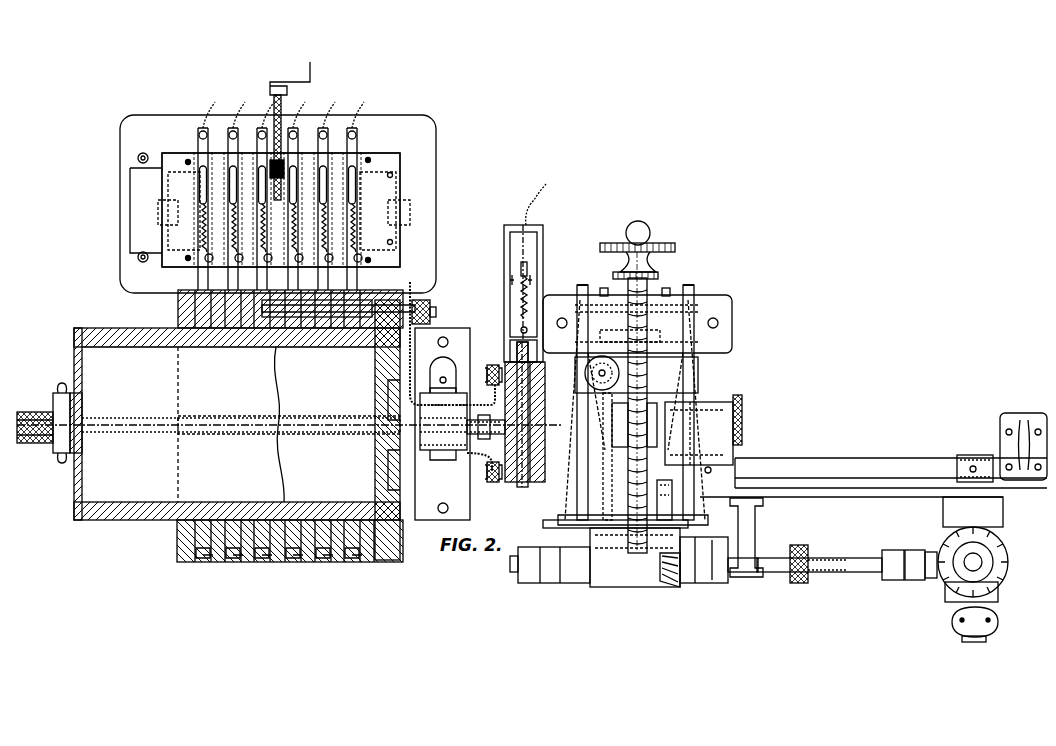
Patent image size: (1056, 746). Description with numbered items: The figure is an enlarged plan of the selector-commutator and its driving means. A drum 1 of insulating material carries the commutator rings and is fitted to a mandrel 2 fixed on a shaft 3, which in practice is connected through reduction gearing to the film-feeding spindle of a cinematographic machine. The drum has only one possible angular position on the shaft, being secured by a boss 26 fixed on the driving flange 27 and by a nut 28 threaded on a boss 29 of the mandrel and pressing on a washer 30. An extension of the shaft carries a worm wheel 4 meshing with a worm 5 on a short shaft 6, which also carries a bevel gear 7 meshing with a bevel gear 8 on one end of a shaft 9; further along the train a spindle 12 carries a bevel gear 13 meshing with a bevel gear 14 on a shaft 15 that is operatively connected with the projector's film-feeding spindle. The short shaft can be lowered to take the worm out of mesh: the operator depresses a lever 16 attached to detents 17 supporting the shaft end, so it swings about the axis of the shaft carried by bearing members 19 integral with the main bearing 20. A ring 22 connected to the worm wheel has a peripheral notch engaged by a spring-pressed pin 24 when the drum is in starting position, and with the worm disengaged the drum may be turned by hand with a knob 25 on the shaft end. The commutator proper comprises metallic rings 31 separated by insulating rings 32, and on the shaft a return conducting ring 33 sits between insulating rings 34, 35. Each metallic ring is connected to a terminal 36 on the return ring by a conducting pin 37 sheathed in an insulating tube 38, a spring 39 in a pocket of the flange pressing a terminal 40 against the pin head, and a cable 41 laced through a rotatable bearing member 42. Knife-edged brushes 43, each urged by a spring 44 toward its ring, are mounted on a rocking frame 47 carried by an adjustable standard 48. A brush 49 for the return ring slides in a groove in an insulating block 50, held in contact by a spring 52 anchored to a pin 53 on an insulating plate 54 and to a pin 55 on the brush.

The drum 1 is at (110, 520).
The mandrel 2 is at (300, 360).
The shaft 3 is at (317, 417).
The worm wheel 4 is at (647, 490).
The worm 5 is at (648, 448).
The short shaft 6 is at (645, 298).
The bevel gear 7 is at (607, 557).
The bevel gear 8 is at (668, 586).
The shaft 9 is at (782, 550).
The spindle 12 is at (986, 562).
The bevel gear 13 is at (1001, 546).
The bevel gear 14 is at (998, 594).
The shaft 15 is at (988, 636).
The lever 16 is at (644, 232).
The detents 17 is at (602, 271).
The bearing members 19 is at (597, 583).
The main bearing 20 is at (655, 515).
The ring 22 is at (608, 457).
The spring-pressed pin 24 is at (577, 376).
The knob 25 is at (736, 408).
The boss 26 is at (372, 562).
The driving flange 27 is at (384, 566).
The nut 28 is at (58, 399).
The boss 29 is at (48, 456).
The washer 30 is at (74, 482).
The metallic rings 31 is at (195, 539).
The rings of insulating material 32 is at (343, 558).
The return conducting ring 33 is at (522, 484).
The ring of insulating material 34 is at (508, 485).
The ring of insulating material 35 is at (540, 487).
The terminals 36 is at (488, 372).
The conducting pin 37 is at (283, 354).
The tube 38 is at (327, 340).
The spring 39 is at (423, 306).
The terminal 40 is at (370, 295).
The cable 41 is at (412, 340).
The rotatable bearing member 42 is at (420, 460).
The brushes or collectors 43 is at (240, 282).
The spring 44 is at (343, 244).
The rocking frame 47 is at (148, 158).
The standard 48 is at (390, 215).
The brush or collector 49 is at (534, 218).
The block 50 is at (510, 350).
The spring 52 is at (526, 303).
The pin 53 is at (538, 324).
The plate 54 is at (526, 293).
The pin 55 is at (519, 274).